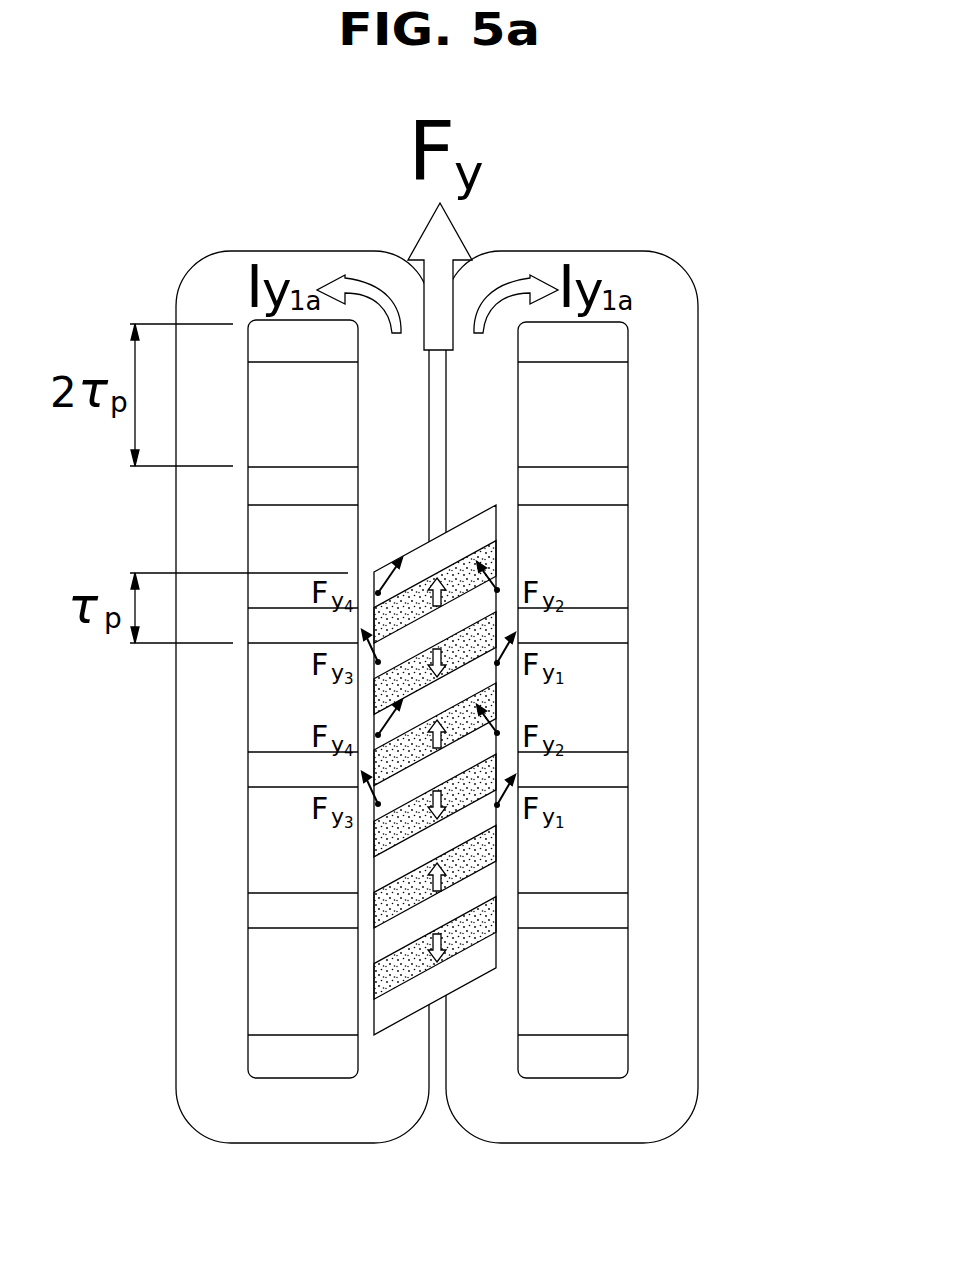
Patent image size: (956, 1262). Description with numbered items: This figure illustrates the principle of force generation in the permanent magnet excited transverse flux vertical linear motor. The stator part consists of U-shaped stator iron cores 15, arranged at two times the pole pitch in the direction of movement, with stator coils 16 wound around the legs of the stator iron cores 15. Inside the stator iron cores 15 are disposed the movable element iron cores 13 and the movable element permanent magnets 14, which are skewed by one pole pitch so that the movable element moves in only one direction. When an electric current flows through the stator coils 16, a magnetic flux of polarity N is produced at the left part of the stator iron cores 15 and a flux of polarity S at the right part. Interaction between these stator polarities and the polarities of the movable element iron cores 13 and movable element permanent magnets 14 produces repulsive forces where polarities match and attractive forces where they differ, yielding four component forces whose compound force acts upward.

The movable element iron cores 13 is at (589, 768).
The movable element permanent magnets 14 is at (490, 635).
The stator iron cores 15 is at (603, 917).
The stator coils 16 is at (658, 1003).